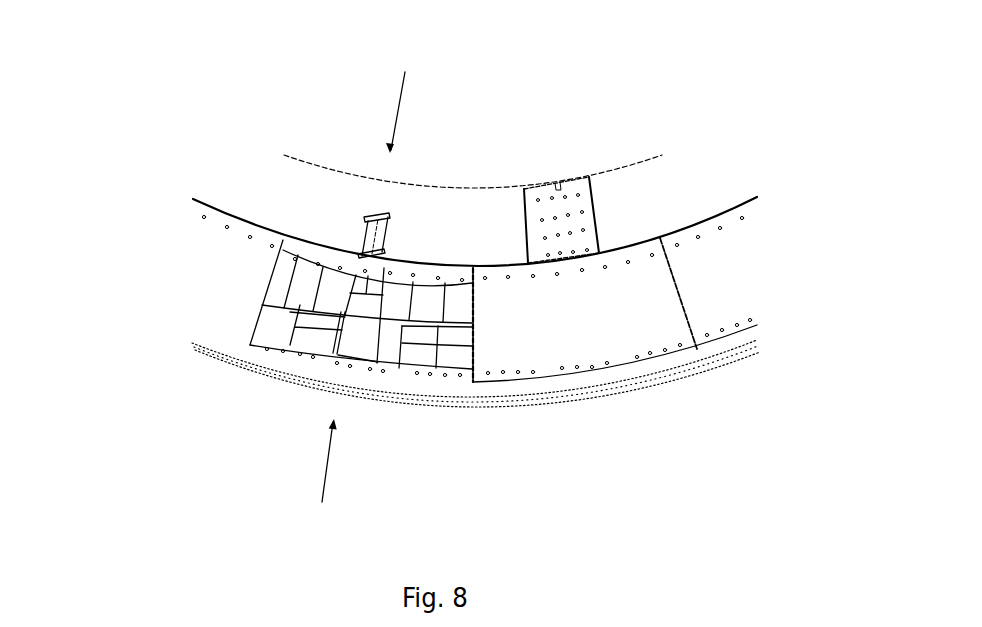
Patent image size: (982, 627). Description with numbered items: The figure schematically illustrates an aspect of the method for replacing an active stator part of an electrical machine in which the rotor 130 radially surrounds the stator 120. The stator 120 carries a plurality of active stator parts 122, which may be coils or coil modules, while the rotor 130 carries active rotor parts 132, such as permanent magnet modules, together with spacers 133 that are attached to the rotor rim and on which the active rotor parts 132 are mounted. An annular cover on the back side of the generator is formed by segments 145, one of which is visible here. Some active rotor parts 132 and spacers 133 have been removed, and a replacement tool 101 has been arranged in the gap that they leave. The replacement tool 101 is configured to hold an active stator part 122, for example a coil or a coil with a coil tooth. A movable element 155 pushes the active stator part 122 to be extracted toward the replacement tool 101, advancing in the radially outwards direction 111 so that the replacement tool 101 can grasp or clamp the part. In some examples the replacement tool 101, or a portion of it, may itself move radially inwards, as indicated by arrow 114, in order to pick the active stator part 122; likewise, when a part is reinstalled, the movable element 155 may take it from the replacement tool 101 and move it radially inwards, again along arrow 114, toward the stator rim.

The replacement tool 101 is at (345, 357).
The radially outwards direction 111 is at (399, 102).
The radially inwards direction arrow 114 is at (330, 488).
The stator 120 is at (450, 168).
The active stator part 122 is at (360, 327).
The rotor 130 is at (268, 402).
The active rotor part 132 is at (290, 308).
The spacer 133 is at (283, 333).
The segment 145 is at (588, 340).
The movable element 155 is at (380, 228).